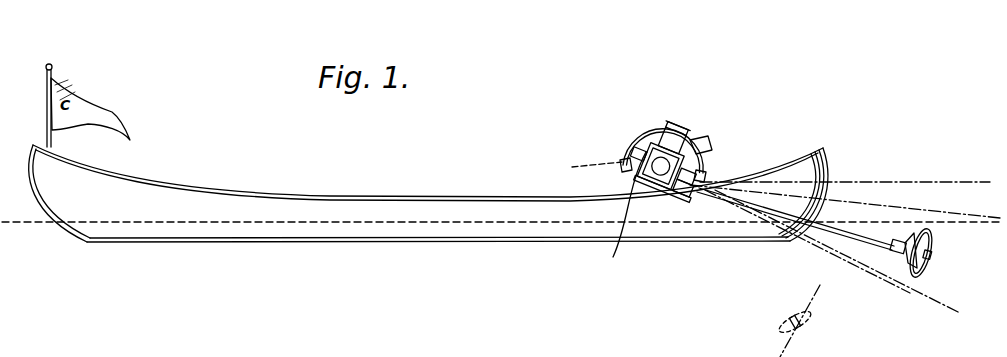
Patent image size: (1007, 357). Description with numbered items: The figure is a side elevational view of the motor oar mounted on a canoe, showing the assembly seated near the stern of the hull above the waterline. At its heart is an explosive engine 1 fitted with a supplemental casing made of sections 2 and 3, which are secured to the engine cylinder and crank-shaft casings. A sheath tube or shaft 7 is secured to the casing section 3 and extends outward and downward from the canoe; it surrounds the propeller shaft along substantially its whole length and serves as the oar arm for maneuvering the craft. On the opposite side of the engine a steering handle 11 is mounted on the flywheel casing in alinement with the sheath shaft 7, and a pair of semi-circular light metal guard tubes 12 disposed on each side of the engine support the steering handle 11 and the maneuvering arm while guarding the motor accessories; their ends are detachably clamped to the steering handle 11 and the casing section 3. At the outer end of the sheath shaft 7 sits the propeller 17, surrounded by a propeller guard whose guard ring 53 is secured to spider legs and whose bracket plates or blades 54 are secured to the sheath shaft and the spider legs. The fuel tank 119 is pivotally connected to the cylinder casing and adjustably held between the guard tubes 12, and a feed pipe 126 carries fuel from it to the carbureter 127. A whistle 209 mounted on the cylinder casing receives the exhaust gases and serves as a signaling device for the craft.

The explosive engine 1 is at (637, 143).
The supplemental casing section 2 is at (705, 162).
The supplemental casing section 3 is at (700, 177).
The sheath tube or shaft 7 is at (870, 228).
The steering handle 11 is at (622, 167).
The guard tubes 12 is at (652, 134).
The propeller 17 is at (928, 237).
The guard ring 53 is at (926, 263).
The bracket plates or blades 54 is at (897, 253).
The fuel tank 119 is at (708, 142).
The feed pipe 126 is at (700, 132).
The carbureter 127 is at (665, 192).
The whistle 209 is at (619, 212).